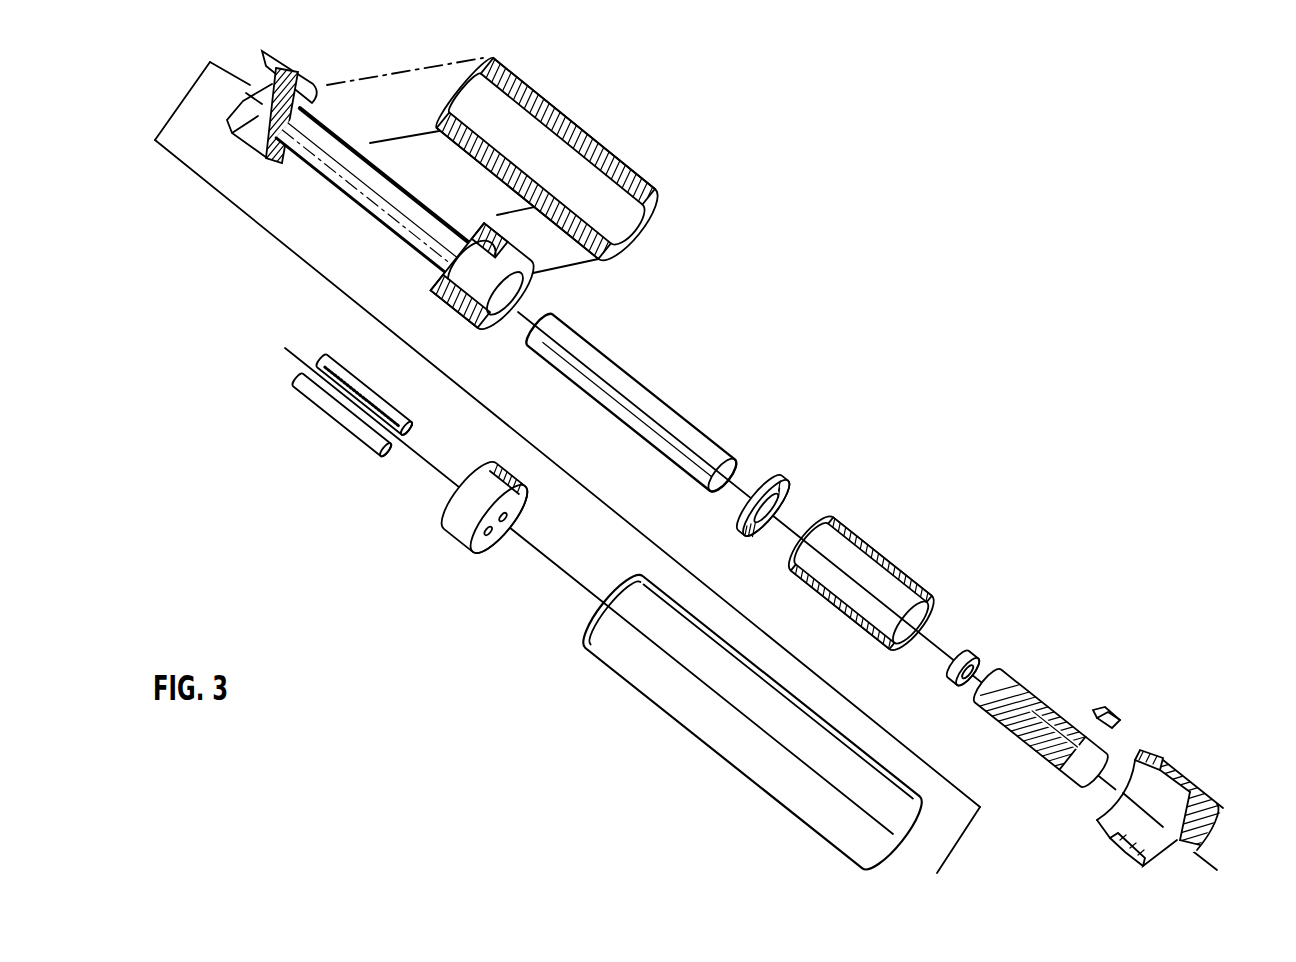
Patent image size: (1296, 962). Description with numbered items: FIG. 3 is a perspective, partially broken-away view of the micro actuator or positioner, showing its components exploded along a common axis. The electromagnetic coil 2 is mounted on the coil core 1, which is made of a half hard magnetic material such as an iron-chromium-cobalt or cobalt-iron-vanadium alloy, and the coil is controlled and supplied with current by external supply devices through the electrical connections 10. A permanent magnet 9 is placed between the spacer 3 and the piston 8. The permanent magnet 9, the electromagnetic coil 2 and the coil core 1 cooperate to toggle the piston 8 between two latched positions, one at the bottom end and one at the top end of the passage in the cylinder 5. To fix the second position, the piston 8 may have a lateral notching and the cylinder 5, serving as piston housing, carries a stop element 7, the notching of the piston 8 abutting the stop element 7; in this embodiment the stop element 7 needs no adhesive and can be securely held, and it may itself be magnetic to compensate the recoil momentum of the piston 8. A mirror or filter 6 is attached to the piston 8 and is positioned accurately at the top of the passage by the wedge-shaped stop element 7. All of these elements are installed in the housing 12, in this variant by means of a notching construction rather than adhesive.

The coil core 1 is at (660, 412).
The electromagnetic coil 2 is at (575, 130).
The spacer 3 is at (762, 470).
The cylinder 5 is at (882, 553).
The mirror or filter 6 is at (1113, 708).
The stop element 7 is at (1203, 787).
The piston 8 is at (1017, 683).
The permanent magnet 9 is at (970, 657).
The electrical connections 10 is at (462, 522).
The housing 12 is at (675, 708).